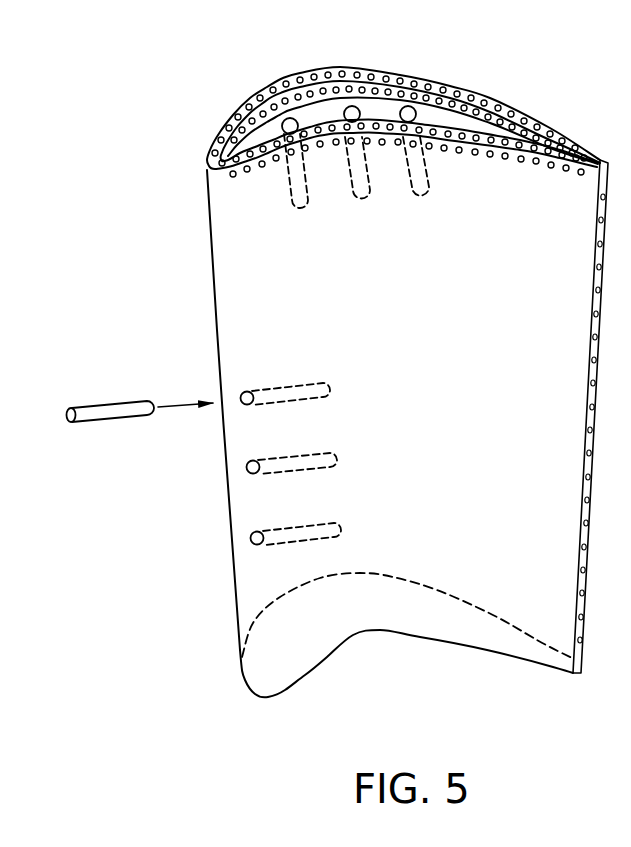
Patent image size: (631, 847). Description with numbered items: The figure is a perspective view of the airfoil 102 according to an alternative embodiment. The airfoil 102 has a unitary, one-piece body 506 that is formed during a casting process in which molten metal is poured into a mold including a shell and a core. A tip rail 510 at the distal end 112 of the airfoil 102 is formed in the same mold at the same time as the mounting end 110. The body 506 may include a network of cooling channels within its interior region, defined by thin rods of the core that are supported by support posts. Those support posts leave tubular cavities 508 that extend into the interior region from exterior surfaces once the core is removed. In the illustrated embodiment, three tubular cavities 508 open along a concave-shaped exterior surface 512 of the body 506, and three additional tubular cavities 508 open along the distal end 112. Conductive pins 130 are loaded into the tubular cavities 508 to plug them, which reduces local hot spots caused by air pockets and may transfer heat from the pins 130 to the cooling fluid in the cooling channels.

The airfoil 102 is at (72, 135).
The mounting end 110 is at (534, 668).
The distal end 112 is at (505, 100).
The conductive pins 130 is at (108, 400).
The body 506 is at (208, 194).
The tubular cavities 508 is at (415, 100).
The tip rail 510 is at (292, 92).
The concave-shaped exterior surface 512 is at (260, 268).